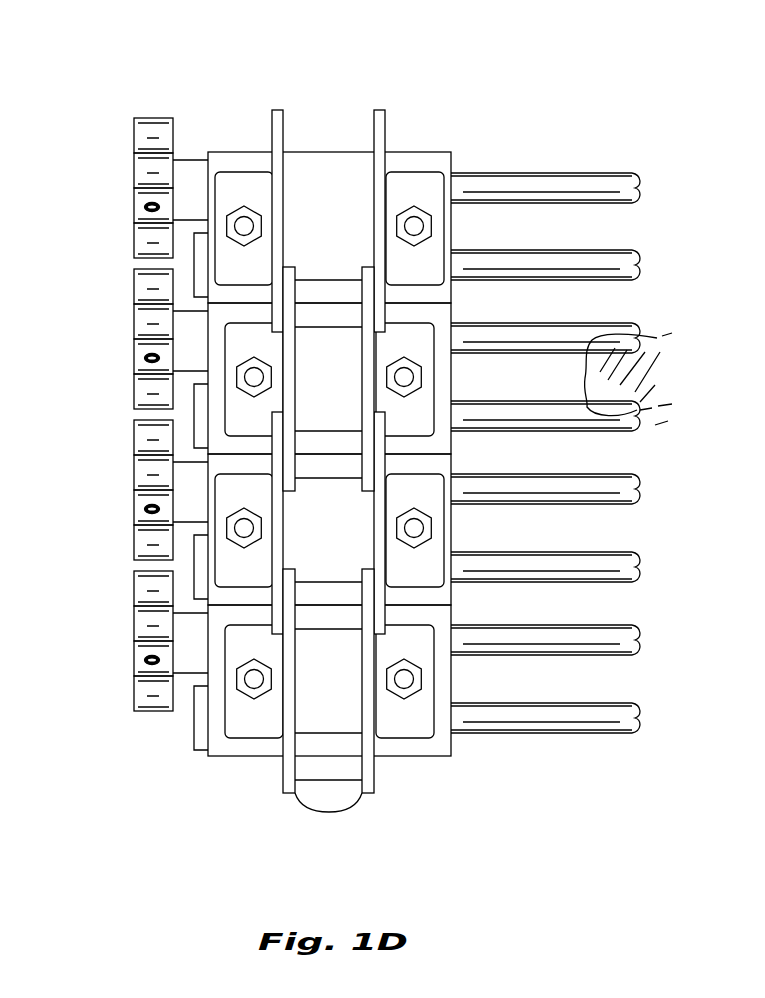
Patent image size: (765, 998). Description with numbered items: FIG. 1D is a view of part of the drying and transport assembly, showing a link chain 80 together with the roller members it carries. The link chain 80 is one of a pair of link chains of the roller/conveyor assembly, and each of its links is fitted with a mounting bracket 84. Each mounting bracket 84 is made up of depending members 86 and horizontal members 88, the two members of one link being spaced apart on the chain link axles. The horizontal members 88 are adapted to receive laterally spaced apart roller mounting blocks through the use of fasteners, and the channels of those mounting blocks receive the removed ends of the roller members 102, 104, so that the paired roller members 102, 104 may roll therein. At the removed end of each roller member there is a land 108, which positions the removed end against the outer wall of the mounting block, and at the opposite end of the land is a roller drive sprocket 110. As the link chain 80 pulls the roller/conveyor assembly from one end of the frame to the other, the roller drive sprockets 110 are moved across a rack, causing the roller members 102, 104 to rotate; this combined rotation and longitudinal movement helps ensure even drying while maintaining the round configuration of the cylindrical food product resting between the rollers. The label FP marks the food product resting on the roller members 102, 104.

The link chain 80 is at (336, 114).
The mounting bracket 84 is at (408, 178).
The depending member 86 is at (329, 812).
The horizontal member 88 is at (248, 730).
The roller member 102 is at (589, 250).
The roller member 104 is at (588, 173).
The land 108 is at (200, 263).
The roller drive sprocket 110 is at (134, 207).
The fluid path FP is at (590, 418).